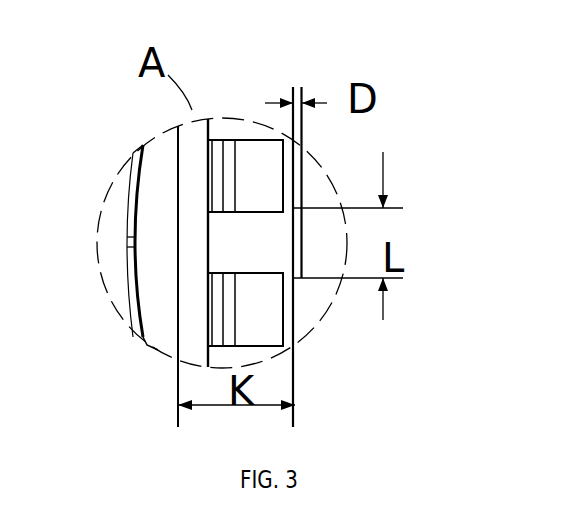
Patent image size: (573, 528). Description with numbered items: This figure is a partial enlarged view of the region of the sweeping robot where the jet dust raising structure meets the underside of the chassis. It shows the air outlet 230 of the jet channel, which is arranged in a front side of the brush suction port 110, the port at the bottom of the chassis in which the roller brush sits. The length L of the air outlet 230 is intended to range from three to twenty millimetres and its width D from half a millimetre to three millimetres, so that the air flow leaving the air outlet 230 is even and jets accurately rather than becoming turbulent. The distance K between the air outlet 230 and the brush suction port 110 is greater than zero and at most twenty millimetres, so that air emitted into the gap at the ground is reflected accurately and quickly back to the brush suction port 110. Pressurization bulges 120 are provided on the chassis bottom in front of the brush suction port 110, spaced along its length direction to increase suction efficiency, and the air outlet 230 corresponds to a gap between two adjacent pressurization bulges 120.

The brush suction port 110 is at (162, 172).
The pressurization bulge 120 is at (267, 315).
The air outlet 230 is at (300, 237).